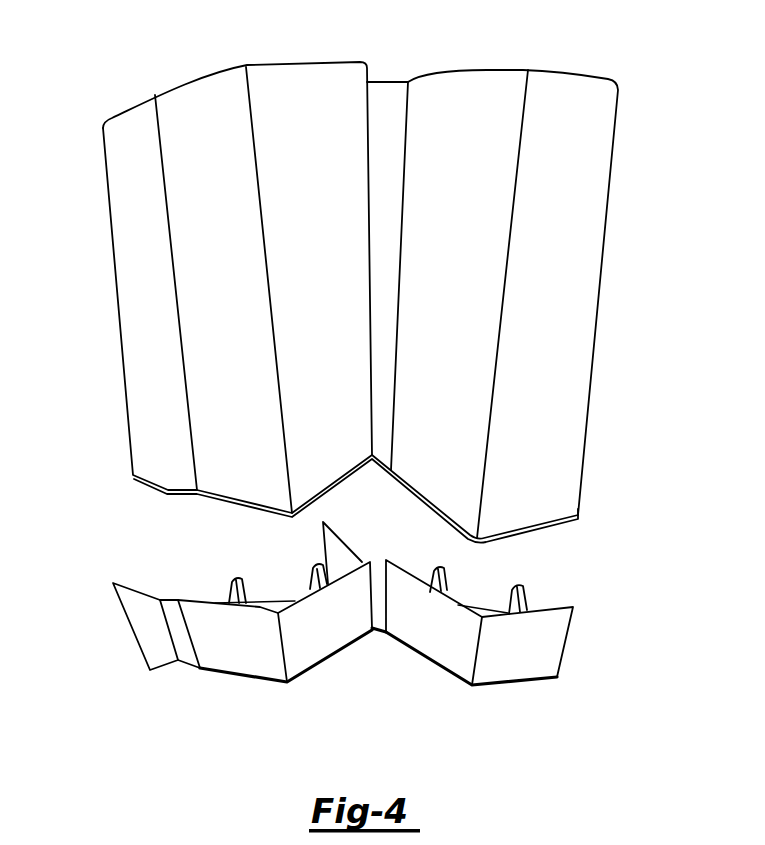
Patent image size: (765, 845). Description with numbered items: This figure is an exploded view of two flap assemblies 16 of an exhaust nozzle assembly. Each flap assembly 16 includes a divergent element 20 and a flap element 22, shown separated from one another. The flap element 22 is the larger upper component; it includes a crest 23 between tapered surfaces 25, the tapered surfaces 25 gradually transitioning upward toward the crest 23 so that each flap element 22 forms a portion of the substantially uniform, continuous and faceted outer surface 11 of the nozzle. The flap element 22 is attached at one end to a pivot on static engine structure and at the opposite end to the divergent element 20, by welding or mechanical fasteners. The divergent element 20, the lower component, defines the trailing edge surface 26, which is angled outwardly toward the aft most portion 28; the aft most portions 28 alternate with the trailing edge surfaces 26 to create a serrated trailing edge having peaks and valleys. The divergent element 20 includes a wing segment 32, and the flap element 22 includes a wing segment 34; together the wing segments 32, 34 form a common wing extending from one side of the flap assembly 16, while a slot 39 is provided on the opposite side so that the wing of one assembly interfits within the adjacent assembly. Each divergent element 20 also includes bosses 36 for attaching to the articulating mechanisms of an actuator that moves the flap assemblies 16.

The outer surface 11 is at (565, 473).
The flap assembly 16 is at (170, 697).
The divergent element 20 is at (233, 655).
The flap element 22 is at (239, 395).
The crest 23 is at (247, 100).
The tapered surface 25 is at (292, 95).
The trailing edge surface 26 is at (358, 678).
The aft most portion 28 is at (286, 692).
The wing segment 32 is at (385, 102).
The wing segment 34 is at (134, 602).
The boss 36 is at (315, 572).
The slot 39 is at (612, 267).